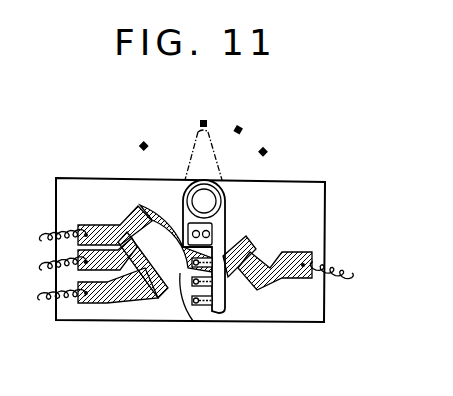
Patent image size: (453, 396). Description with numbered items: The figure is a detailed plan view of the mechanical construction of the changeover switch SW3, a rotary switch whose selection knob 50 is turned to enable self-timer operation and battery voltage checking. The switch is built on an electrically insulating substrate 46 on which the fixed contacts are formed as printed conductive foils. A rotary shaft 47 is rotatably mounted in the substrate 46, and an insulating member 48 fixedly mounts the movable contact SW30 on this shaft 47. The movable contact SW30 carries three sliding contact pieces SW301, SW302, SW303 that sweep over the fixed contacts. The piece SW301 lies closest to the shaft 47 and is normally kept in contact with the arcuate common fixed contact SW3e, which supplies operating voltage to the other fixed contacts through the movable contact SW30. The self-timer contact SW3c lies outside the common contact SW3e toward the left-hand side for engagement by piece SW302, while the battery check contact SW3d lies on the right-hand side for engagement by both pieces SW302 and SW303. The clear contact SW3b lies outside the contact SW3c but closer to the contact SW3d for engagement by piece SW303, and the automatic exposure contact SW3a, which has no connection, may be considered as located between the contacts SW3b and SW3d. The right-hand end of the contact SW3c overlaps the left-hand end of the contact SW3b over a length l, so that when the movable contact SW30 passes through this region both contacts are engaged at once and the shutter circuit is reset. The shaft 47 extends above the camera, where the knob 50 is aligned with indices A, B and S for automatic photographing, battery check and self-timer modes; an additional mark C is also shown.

The changeover switch SW3 is at (283, 177).
The automatic exposure contact SW3a is at (233, 289).
The clear contact SW3b is at (106, 304).
The self-timer contact SW3c is at (137, 222).
The battery check contact SW3d is at (285, 250).
The common fixed contact SW3e is at (252, 243).
The movable contact SW30 is at (228, 306).
The sliding contact piece SW301 is at (148, 286).
The sliding contact piece SW302 is at (197, 287).
The sliding contact piece SW303 is at (193, 304).
The electrically insulating substrate 46 is at (325, 300).
The rotary shaft 47 is at (215, 203).
The insulating member 48 is at (226, 214).
The selection knob 50 is at (214, 142).
The overlap length l is at (151, 274).
The automatic photographing index A is at (201, 111).
The battery check index B is at (134, 137).
The position mark C is at (241, 121).
The self-timer index S is at (268, 143).